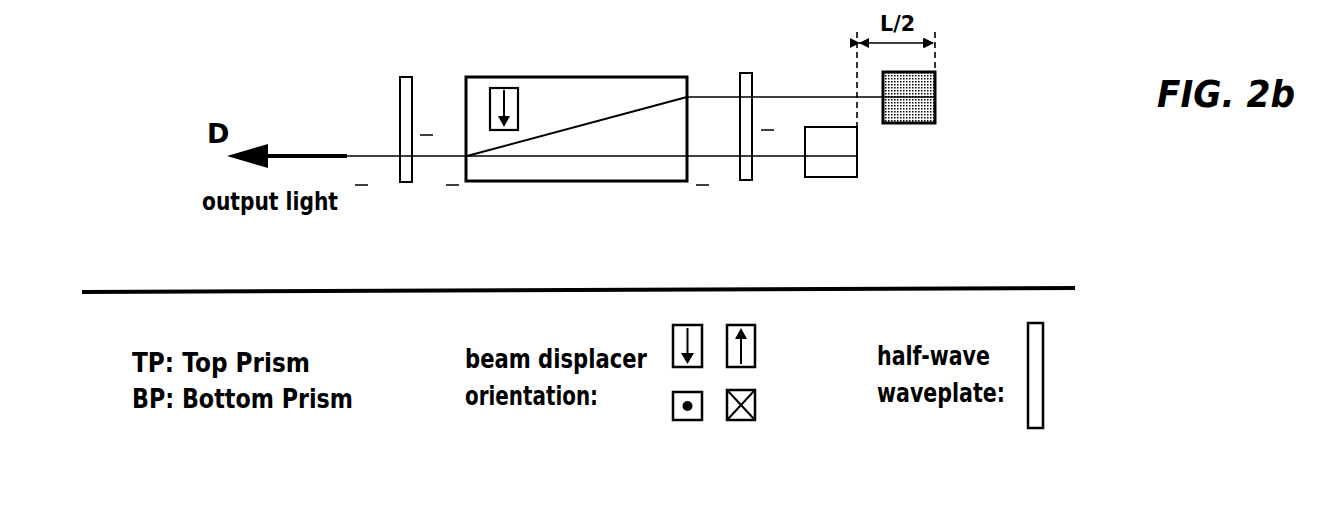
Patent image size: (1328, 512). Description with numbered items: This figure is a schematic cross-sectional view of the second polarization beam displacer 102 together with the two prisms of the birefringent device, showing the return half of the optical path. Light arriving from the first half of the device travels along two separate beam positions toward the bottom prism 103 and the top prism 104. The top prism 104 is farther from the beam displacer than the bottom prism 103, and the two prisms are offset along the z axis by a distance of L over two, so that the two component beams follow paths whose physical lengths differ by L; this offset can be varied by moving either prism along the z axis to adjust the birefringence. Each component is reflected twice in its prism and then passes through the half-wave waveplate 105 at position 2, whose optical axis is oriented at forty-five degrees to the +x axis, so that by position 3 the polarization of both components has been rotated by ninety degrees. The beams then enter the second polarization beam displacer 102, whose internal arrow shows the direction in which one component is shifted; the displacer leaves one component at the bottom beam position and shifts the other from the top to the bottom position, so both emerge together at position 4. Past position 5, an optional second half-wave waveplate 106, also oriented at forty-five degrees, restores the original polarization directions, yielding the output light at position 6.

The second polarization beam displacer 102 is at (617, 77).
The bottom prism 103 is at (858, 168).
The top prism 104 is at (936, 85).
The half-wave waveplate 105 is at (746, 181).
The second half-wave waveplate 106 is at (406, 76).
The position 2 is at (768, 119).
The position 3 is at (703, 174).
The position 4 is at (453, 174).
The position 5 is at (427, 124).
The position 6 is at (362, 174).